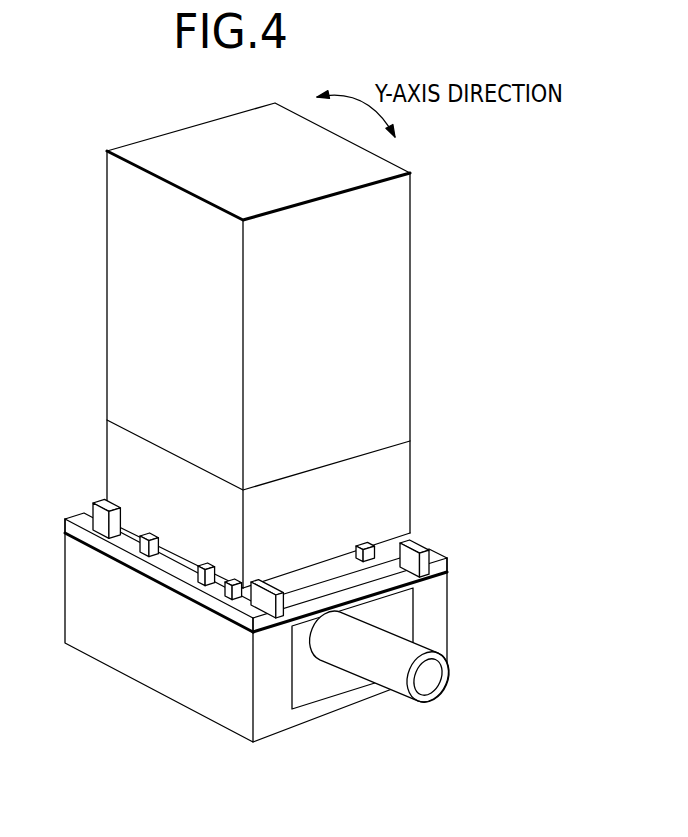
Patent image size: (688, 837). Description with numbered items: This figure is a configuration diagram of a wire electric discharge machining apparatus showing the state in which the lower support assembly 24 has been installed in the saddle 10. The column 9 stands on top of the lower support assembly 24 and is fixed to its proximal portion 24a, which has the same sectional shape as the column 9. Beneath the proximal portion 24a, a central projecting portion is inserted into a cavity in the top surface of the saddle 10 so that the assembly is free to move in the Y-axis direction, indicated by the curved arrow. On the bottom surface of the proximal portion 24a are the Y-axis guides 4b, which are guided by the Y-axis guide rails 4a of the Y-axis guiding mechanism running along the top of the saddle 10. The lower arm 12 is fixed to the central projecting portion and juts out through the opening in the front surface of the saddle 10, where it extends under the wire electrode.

The column 9 is at (410, 253).
The lower support assembly 24 is at (413, 492).
The proximal portion 24a is at (410, 460).
The Y-axis guide rails 4a is at (253, 600).
The Y-axis guides 4b is at (132, 540).
The saddle 10 is at (442, 620).
The lower arm 12 is at (452, 668).